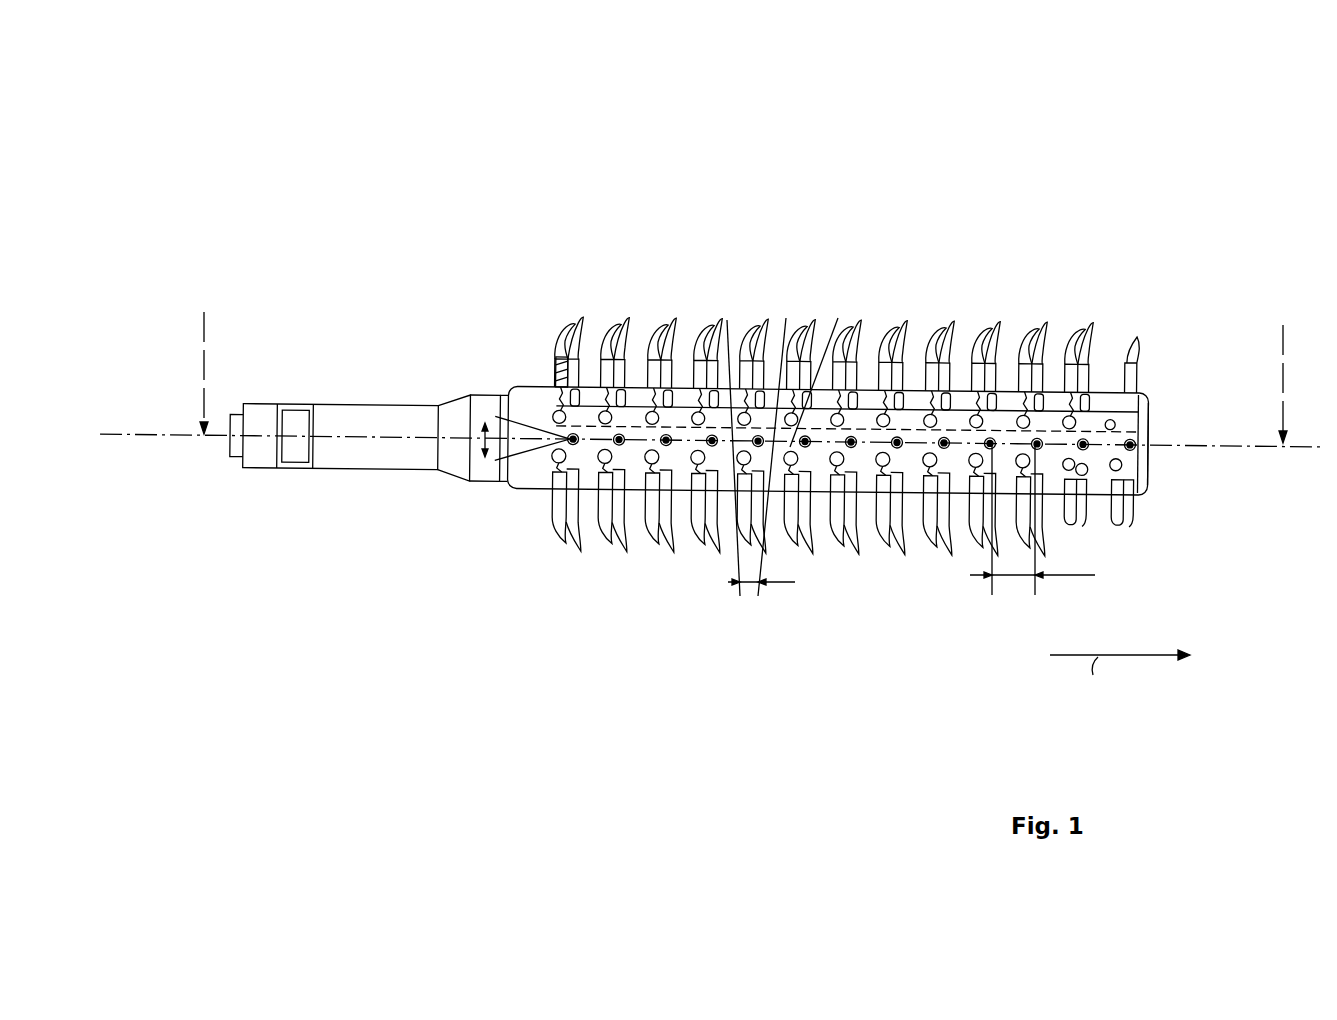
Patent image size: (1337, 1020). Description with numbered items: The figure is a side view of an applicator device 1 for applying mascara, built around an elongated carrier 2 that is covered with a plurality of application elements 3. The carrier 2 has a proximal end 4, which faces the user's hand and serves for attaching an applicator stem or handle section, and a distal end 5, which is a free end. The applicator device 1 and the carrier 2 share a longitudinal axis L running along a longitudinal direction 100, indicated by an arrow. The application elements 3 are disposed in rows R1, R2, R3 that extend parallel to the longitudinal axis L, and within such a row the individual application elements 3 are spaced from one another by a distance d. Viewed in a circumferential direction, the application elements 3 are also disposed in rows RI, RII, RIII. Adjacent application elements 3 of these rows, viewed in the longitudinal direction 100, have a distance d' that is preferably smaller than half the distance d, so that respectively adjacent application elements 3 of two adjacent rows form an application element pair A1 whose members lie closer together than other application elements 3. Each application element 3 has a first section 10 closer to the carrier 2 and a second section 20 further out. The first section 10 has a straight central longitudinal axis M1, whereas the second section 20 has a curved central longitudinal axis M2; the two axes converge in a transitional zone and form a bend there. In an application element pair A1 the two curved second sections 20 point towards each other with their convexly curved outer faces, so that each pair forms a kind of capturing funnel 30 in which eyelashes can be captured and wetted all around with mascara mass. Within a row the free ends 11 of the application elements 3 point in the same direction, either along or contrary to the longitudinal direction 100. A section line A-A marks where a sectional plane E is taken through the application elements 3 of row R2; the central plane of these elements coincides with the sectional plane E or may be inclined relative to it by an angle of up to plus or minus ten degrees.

The applicator device 1 is at (735, 188).
The carrier 2 is at (540, 478).
The application elements 3 is at (615, 545).
The proximal end 4 is at (365, 405).
The distal end 5 is at (1148, 446).
The first section 10 is at (566, 352).
The second section 20 is at (556, 376).
The capturing funnel 30 is at (615, 325).
The free ends 11 is at (668, 325).
The longitudinal direction 100 is at (1120, 674).
The section line A- A is at (742, 362).
The application element pair A1 is at (963, 453).
The sectional plane E is at (404, 440).
The longitudinal axis L is at (712, 462).
The central longitudinal axis of first section M1 is at (557, 382).
The central longitudinal axis of second section M2 is at (558, 365).
The first row R1 is at (1085, 427).
The second row R2 is at (1118, 405).
The third row R3 is at (1052, 395).
The first circumferential row RI is at (729, 442).
The second circumferential row RII is at (777, 442).
The third circumferential row RIII is at (824, 367).
The distance between application elements in a row d is at (1032, 520).
The distance between adjacent rows d' is at (761, 569).